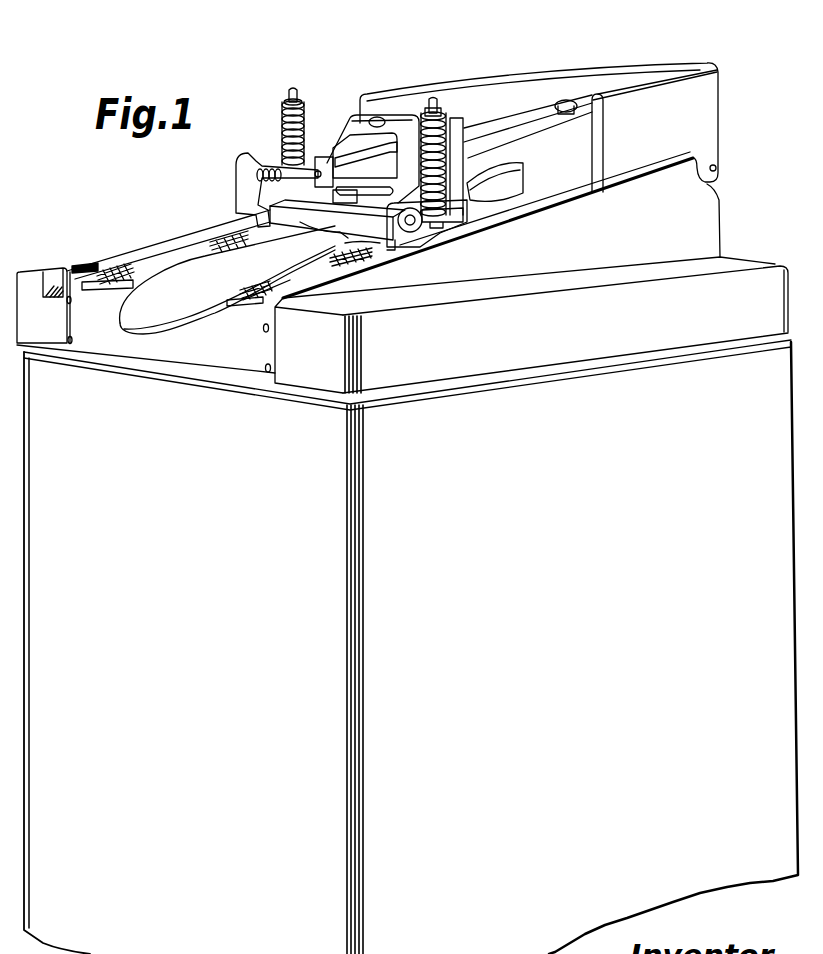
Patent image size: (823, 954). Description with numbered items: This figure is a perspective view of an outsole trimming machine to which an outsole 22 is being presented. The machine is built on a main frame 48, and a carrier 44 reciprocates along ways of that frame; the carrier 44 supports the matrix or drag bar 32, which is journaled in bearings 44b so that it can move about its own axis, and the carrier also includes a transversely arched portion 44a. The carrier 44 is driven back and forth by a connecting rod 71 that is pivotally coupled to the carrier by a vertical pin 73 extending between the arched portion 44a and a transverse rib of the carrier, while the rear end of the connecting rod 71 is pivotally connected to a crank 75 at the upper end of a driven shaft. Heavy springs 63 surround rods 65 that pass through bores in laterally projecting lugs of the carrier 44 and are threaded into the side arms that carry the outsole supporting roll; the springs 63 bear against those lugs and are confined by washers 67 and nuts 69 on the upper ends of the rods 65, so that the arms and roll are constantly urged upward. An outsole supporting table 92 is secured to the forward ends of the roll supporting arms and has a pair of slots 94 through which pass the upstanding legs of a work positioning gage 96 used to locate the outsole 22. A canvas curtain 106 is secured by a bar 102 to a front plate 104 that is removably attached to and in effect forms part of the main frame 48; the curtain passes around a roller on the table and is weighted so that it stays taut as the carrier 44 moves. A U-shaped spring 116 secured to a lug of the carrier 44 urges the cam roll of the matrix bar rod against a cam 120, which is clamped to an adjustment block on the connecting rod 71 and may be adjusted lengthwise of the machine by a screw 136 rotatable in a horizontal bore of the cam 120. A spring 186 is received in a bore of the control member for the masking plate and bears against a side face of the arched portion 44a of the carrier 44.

The outsole 22 is at (160, 285).
The matrix bar 32 is at (410, 230).
The carrier 44 is at (332, 118).
The transversely arched portion 44a is at (400, 123).
The bearings 44b is at (423, 222).
The main frame 48 is at (563, 285).
The springs 63 is at (280, 125).
The rods 65 is at (294, 92).
The washers 67 is at (280, 127).
The nuts 69 is at (438, 114).
The connecting rod 71 is at (574, 108).
The vertical pin 73 is at (378, 118).
The crank 75 is at (583, 142).
The outsole supporting table 92 is at (395, 230).
The slots 94 is at (362, 232).
The work positioning gage 96 is at (305, 232).
The bar 102 is at (113, 287).
The front plate 104 is at (233, 368).
The canvas curtain 106 is at (209, 254).
The U-shaped spring 116 is at (378, 182).
The cam 120 is at (368, 237).
The screw 136 is at (312, 230).
The spring 186 is at (280, 167).